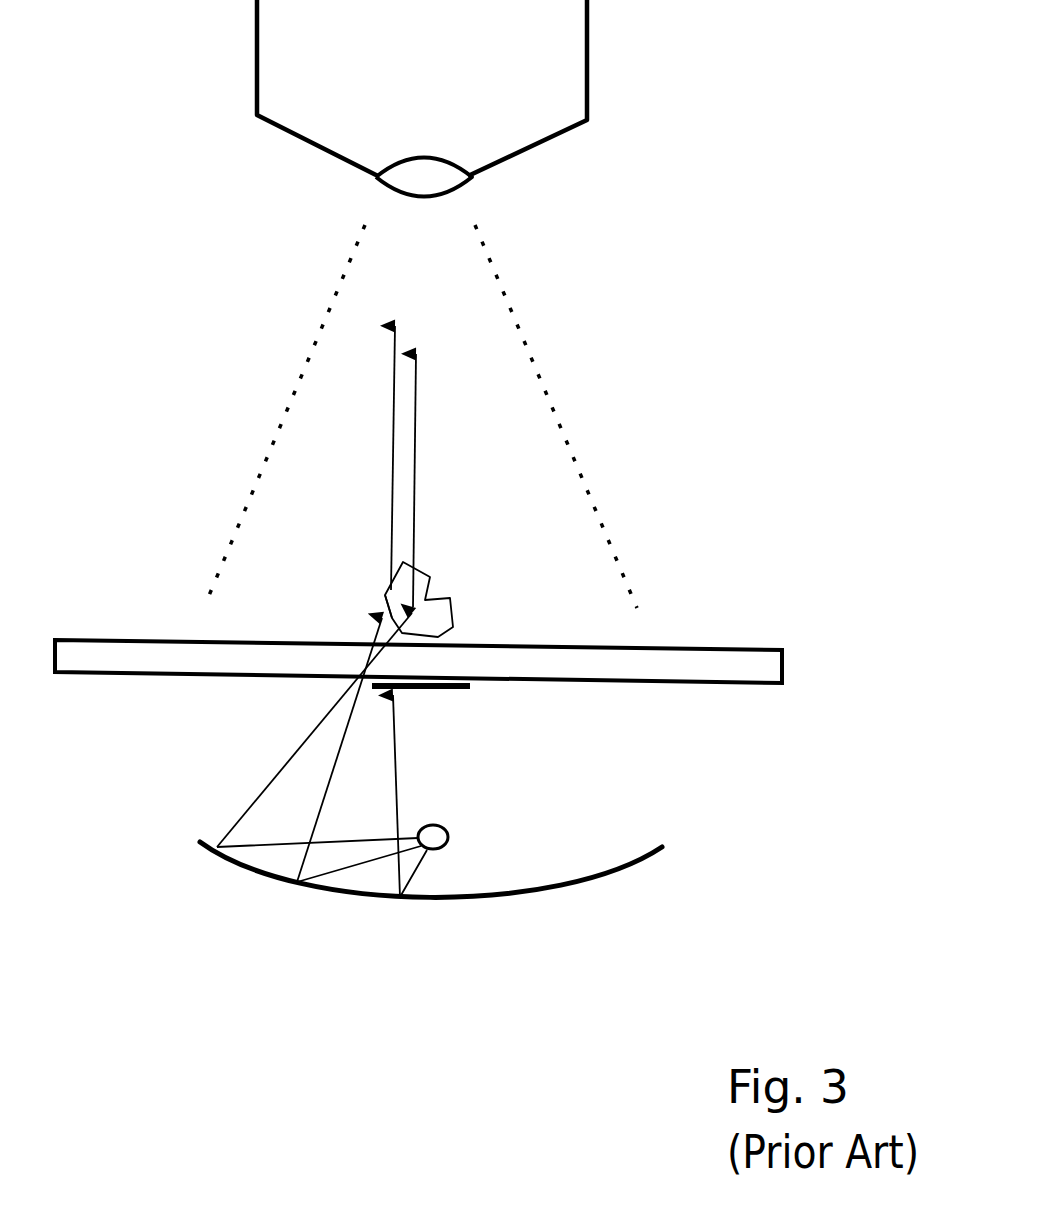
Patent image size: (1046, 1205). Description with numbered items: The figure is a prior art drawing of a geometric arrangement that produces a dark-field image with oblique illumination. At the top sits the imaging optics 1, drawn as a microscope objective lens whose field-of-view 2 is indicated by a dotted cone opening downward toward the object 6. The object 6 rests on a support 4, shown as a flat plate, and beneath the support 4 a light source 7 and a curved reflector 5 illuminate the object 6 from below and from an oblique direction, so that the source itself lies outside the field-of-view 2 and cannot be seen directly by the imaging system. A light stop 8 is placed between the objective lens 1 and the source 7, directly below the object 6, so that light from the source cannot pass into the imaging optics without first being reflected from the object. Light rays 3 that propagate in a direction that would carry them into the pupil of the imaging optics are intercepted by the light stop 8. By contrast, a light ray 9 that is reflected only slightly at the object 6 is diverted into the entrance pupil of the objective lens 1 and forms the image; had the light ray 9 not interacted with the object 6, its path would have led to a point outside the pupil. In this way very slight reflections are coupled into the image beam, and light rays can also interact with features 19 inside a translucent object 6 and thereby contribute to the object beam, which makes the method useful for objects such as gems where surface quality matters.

The imaging optics 1 is at (573, 100).
The field-of-view 2 is at (615, 448).
The light rays 3 is at (400, 812).
The support 4 is at (750, 662).
The reflector 5 is at (590, 880).
The object 6 is at (445, 622).
The light source 7 is at (450, 833).
The light stop 8 is at (458, 690).
The light ray 9 is at (322, 793).
The features 19 is at (410, 612).